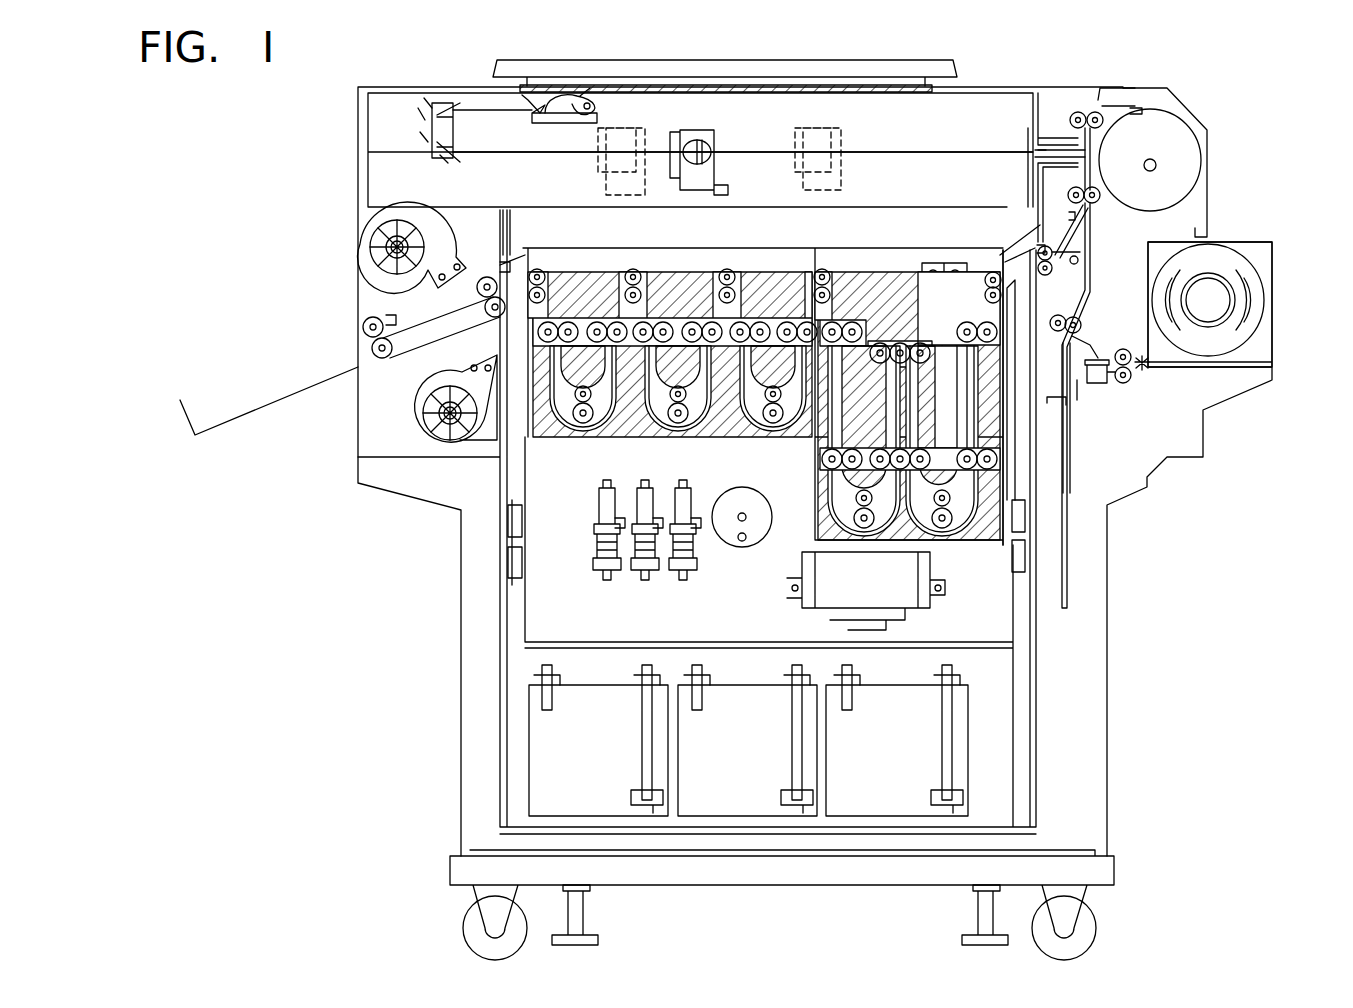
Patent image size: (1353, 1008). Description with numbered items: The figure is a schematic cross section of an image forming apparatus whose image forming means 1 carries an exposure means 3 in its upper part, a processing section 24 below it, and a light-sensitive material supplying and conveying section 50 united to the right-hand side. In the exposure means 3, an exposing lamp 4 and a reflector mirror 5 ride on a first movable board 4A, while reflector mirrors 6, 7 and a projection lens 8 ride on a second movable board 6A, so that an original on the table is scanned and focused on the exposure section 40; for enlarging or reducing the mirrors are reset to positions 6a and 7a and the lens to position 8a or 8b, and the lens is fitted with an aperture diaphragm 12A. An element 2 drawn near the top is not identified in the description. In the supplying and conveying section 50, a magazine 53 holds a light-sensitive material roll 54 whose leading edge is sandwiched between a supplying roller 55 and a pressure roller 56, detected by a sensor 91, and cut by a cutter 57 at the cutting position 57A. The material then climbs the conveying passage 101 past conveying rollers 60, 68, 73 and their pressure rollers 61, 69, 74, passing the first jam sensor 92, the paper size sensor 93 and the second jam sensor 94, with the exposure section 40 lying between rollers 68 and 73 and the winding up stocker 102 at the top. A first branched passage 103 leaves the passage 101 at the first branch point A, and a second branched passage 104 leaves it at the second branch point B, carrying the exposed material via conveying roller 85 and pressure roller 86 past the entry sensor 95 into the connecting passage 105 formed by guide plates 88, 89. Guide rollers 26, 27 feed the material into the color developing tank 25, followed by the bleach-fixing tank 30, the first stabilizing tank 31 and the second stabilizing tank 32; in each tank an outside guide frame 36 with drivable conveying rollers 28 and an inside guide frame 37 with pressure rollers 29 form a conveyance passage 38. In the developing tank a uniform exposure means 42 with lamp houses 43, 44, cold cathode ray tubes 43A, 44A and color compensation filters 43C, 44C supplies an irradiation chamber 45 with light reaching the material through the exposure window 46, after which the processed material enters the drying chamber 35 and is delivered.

The image forming means 1 is at (462, 712).
The cover 2 is at (840, 86).
The exposure means 3 is at (950, 112).
The exposing lamp 4 is at (582, 96).
The first movable board 4A is at (555, 123).
The reflector mirror 5 is at (532, 105).
The reflector mirror 6 is at (440, 103).
The position 6a is at (428, 103).
The second movable board 6A is at (446, 158).
The reflector mirror 7 is at (450, 115).
The position 7a is at (420, 120).
The projection lens 8 is at (700, 140).
The position 8a is at (622, 135).
The position 8b is at (822, 135).
The aperture diaphragm 12A is at (690, 140).
The processing section 24 is at (560, 460).
The color developing tank 25 is at (875, 272).
The guide roller 26 is at (945, 268).
The guide roller 27 is at (1025, 350).
The drivable conveying rollers 28 is at (962, 528).
The pressure rollers 29 is at (768, 400).
The bleach-fixing tank 30 is at (772, 272).
The first stabilizing tank 31 is at (678, 272).
The second stabilizing tank 32 is at (585, 272).
The drying chamber 35 is at (378, 430).
The outside guide frame 36 is at (975, 530).
The inside guide frame 37 is at (935, 505).
The conveyance passage 38 is at (975, 525).
The exposure section 40 is at (1045, 145).
The uniform exposure means 42 is at (1030, 428).
The lamp house 43 is at (920, 215).
The cold cathode ray tube 43A is at (955, 268).
The color compensation filter 43C is at (970, 390).
The lamp house 44 is at (938, 262).
The cold cathode ray tube 44A is at (933, 268).
The color compensation filter 44C is at (925, 293).
The irradiation chamber 45 is at (1020, 397).
The exposure window 46 is at (975, 380).
The light-sensitive material supplying and conveying section 50 is at (1180, 215).
The magazine 53 is at (1250, 248).
The light-sensitive material roll 54 is at (1228, 275).
The supplying roller 55 is at (1120, 385).
The pressure roller 56 is at (1122, 367).
The light-sensitive material cutter 57 is at (1078, 400).
The light-sensitive material cutting position 57A is at (1098, 385).
The conveying roller 60 is at (1052, 418).
The roller 61 is at (1080, 342).
The conveying roller 68 is at (1070, 195).
The roller 69 is at (1148, 200).
The conveying roller 73 is at (1080, 112).
The roller 74 is at (1097, 112).
The conveying roller 85 is at (1046, 246).
The pressure roller 86 is at (1056, 314).
The guide plate 88 is at (1020, 390).
The guide plate 89 is at (995, 272).
The sensor 91 is at (1142, 370).
The first sensor for detecting jams 92 is at (1070, 330).
The paper size sensor 93 is at (1069, 216).
The second sensor for detecting jams 94 is at (1135, 90).
The entry sensor 95 is at (1040, 250).
The light-sensitive material conveying passage 101 is at (1078, 300).
The light-sensitive material winding up stocker 102 is at (1180, 150).
The first branched passage 103 is at (1070, 466).
The second branched passage 104 is at (1068, 270).
The connecting passage 105 is at (1038, 255).
The first branch point A is at (1058, 400).
The second branch point B is at (1075, 257).